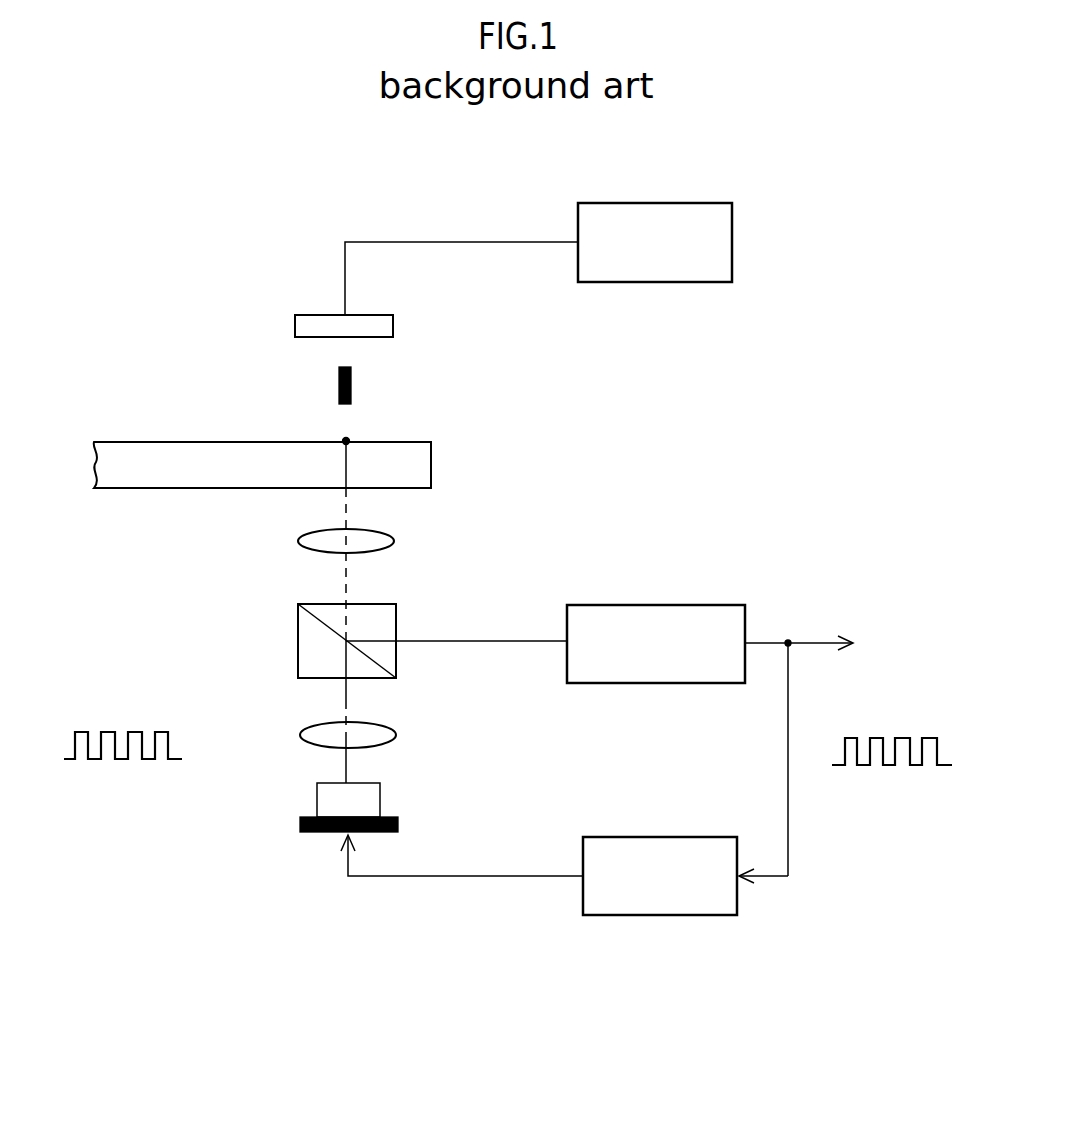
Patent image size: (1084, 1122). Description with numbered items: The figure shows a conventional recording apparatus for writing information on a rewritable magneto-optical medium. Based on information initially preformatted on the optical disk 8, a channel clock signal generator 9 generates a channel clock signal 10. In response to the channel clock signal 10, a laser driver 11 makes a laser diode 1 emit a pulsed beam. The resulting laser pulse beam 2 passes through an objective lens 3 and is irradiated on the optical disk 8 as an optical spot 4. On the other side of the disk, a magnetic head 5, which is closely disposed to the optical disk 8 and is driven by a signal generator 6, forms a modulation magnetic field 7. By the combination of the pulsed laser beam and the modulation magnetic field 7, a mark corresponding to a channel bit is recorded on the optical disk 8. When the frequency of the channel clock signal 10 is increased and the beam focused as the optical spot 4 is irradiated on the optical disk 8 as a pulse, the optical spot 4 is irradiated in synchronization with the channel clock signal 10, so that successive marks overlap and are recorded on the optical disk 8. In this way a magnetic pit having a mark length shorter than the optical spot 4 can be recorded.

The laser diode 1 is at (297, 822).
The laser pulse beam 2 is at (326, 696).
The objective lens 3 is at (386, 538).
The optical spot 4 is at (346, 441).
The magnetic head 5 is at (392, 321).
The signal generator 6 is at (732, 245).
The modulation magnetic field 7 is at (351, 384).
The optical disk 8 is at (150, 486).
The channel clock signal generator 9 is at (660, 607).
The channel clock signal 10 is at (790, 750).
The laser driver 11 is at (666, 912).